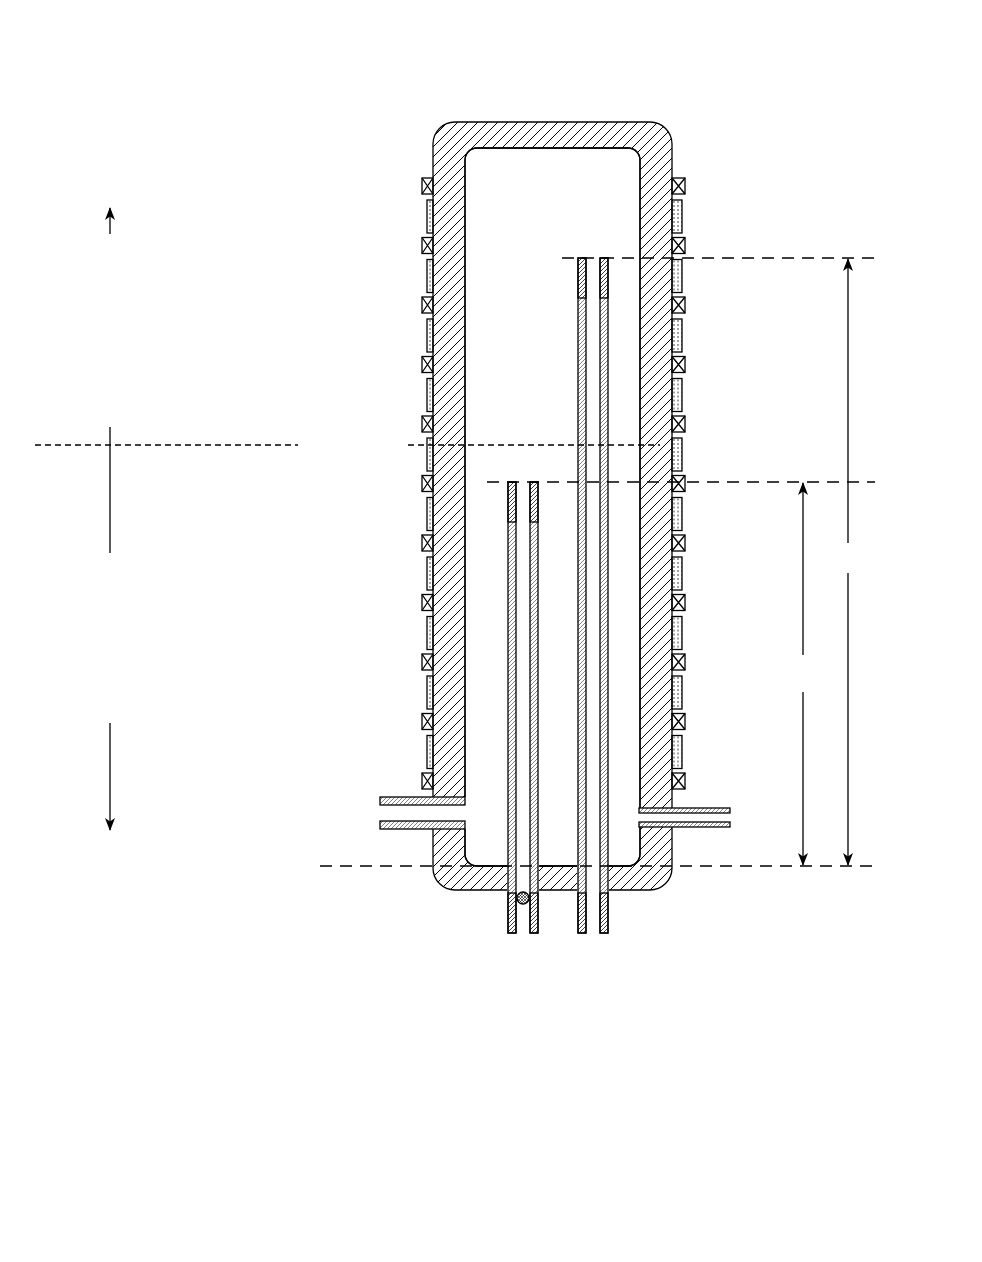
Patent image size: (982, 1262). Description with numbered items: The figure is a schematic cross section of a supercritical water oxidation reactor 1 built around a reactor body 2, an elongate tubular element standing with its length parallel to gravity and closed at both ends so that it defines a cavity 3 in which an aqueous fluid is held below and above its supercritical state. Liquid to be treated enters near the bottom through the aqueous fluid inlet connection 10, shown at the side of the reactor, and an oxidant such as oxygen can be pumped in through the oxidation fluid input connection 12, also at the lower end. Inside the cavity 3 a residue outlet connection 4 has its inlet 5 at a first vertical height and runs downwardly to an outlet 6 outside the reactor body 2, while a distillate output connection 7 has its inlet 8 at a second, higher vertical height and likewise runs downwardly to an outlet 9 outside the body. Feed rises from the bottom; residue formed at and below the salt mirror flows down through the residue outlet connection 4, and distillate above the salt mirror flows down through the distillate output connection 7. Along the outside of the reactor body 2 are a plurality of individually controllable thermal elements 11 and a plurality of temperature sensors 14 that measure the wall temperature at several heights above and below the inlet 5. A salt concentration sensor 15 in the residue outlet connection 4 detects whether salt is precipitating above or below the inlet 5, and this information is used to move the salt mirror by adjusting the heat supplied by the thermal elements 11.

The supercritical water oxidation reactor 1 is at (413, 122).
The reactor body 2 is at (655, 137).
The cavity 3 is at (478, 244).
The residue outlet connection 4 is at (415, 777).
The inlet of residue outlet connection 5 is at (520, 489).
The outlet of residue outlet connection 6 is at (522, 930).
The distillate output connection 7 is at (474, 528).
The inlet of distillate output connection 8 is at (590, 268).
The outlet of distillate output connection 9 is at (593, 925).
The aqueous fluid inlet connection 10 is at (393, 795).
The thermal elements 11 is at (683, 393).
The oxidation fluid input connection 12 is at (706, 805).
The temperature sensors 14 is at (420, 365).
The salt concentration sensor 15 is at (513, 903).